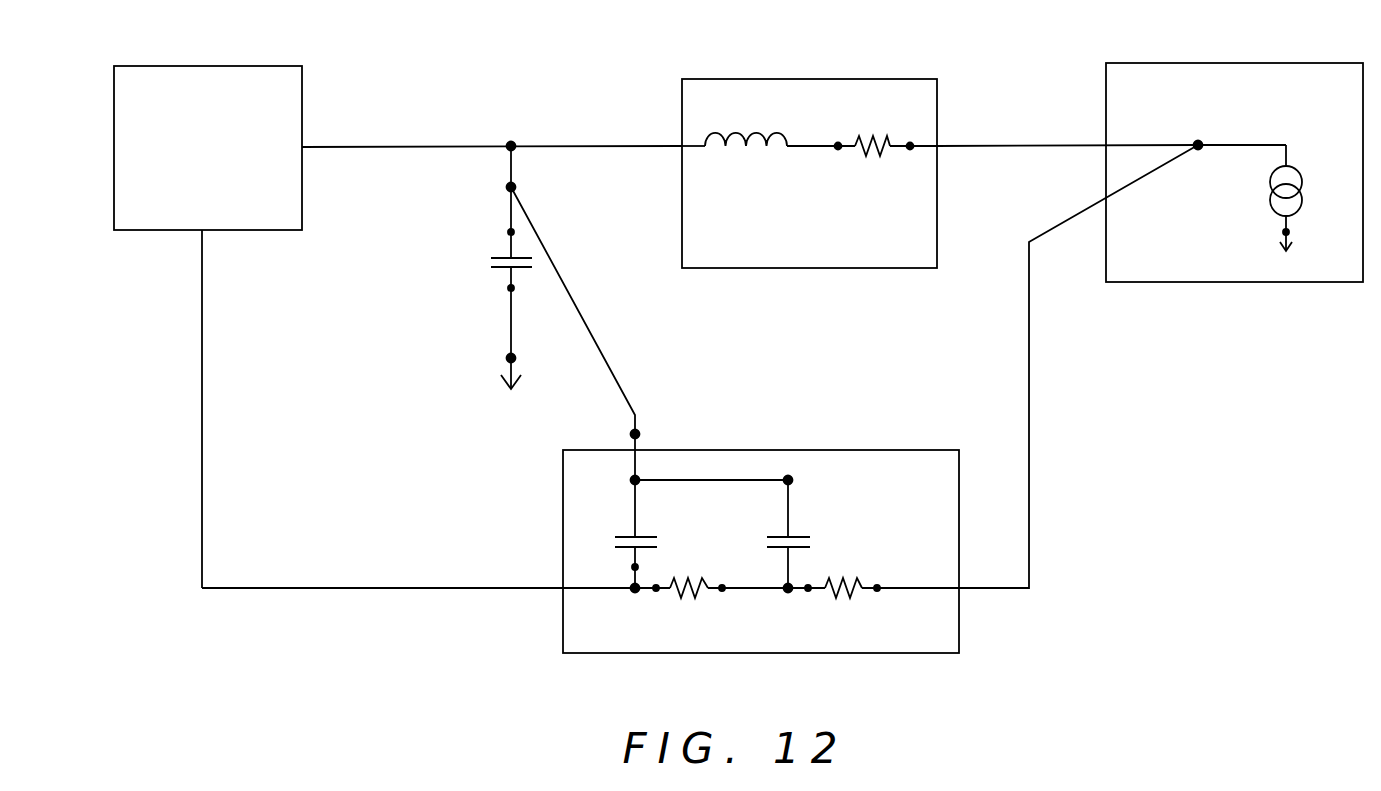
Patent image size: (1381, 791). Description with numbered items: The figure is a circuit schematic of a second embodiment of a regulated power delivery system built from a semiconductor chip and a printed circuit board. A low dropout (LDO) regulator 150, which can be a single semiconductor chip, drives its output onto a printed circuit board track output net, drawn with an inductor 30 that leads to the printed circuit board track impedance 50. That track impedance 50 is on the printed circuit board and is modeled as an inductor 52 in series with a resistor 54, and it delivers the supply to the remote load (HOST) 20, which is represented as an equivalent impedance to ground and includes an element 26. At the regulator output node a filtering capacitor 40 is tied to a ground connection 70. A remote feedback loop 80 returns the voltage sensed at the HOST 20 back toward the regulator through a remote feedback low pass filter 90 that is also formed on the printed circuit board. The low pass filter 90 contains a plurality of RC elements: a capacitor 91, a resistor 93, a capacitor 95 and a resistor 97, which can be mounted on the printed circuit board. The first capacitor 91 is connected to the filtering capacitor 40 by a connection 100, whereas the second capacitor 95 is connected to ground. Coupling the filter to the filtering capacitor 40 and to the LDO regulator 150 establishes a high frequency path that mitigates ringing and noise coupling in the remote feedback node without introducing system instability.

The low dropout (LDO) regulator 150 is at (293, 102).
The inductor 30 is at (423, 116).
The printed circuit board (PCB) track impedance 50 is at (783, 79).
The inductor 52 is at (741, 150).
The resistor 54 is at (870, 165).
The remote load (HOST) 20 is at (1193, 63).
The current source 26 is at (1266, 201).
The filtering capacitor 40 is at (497, 249).
The ground connection 70 is at (492, 387).
The feedback wire 100 is at (600, 347).
The remote feedback loop 80 is at (1060, 476).
The low pass filter (LPF) 90 is at (963, 608).
The capacitor 91 is at (660, 539).
The resistor 93 is at (682, 575).
The capacitor 95 is at (813, 539).
The resistor 97 is at (836, 575).